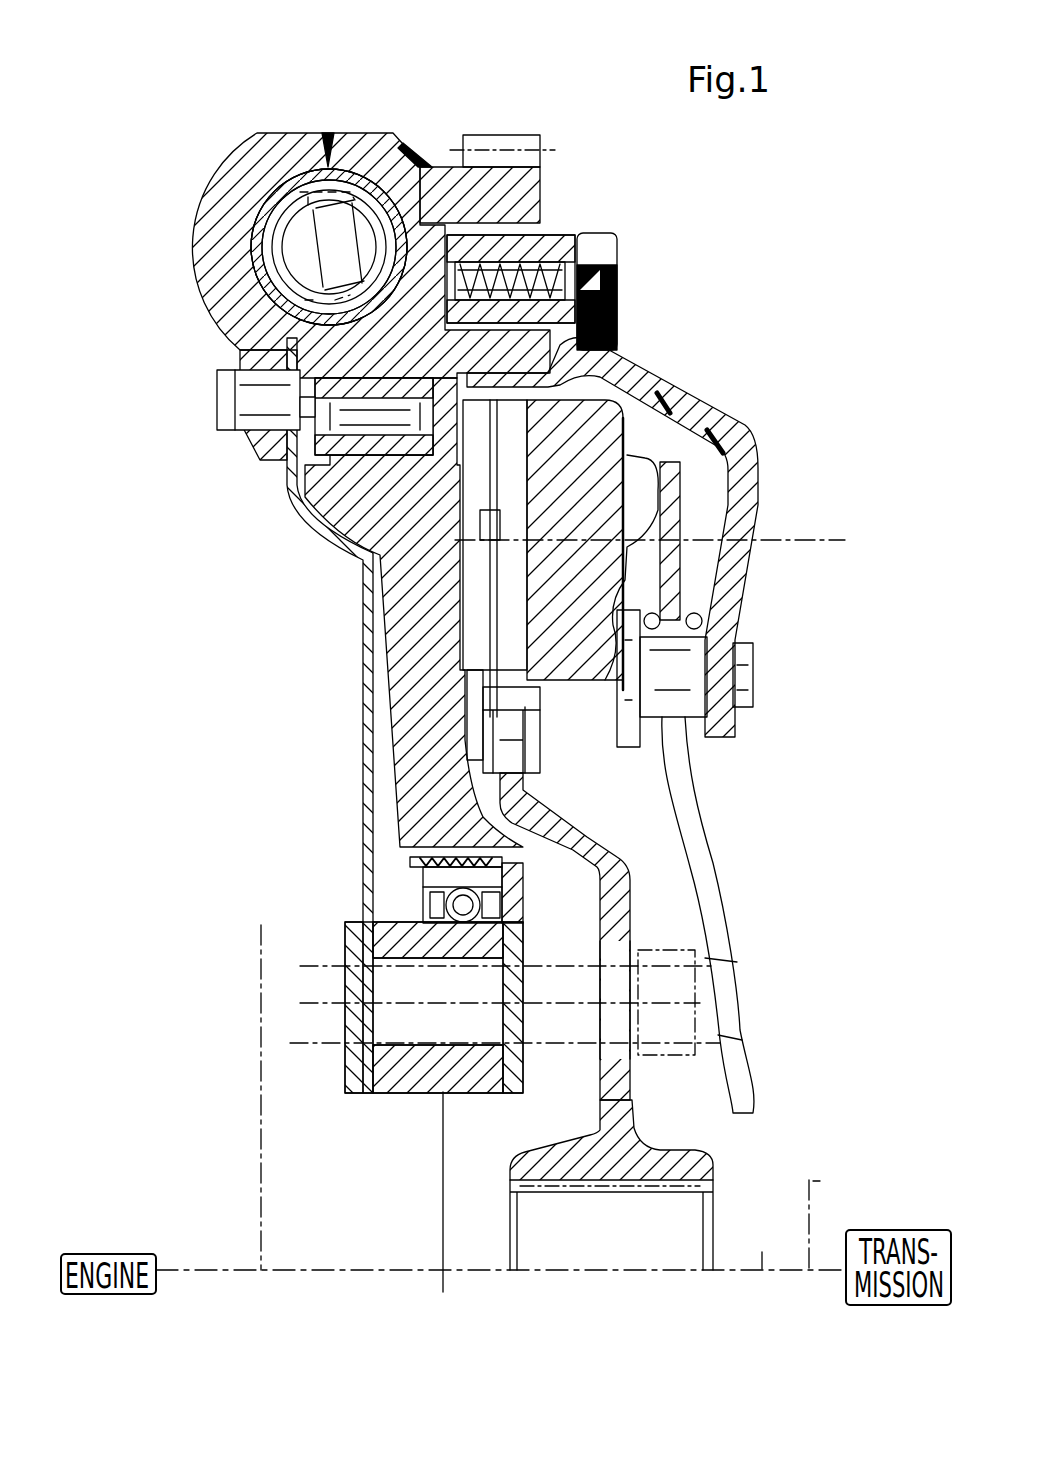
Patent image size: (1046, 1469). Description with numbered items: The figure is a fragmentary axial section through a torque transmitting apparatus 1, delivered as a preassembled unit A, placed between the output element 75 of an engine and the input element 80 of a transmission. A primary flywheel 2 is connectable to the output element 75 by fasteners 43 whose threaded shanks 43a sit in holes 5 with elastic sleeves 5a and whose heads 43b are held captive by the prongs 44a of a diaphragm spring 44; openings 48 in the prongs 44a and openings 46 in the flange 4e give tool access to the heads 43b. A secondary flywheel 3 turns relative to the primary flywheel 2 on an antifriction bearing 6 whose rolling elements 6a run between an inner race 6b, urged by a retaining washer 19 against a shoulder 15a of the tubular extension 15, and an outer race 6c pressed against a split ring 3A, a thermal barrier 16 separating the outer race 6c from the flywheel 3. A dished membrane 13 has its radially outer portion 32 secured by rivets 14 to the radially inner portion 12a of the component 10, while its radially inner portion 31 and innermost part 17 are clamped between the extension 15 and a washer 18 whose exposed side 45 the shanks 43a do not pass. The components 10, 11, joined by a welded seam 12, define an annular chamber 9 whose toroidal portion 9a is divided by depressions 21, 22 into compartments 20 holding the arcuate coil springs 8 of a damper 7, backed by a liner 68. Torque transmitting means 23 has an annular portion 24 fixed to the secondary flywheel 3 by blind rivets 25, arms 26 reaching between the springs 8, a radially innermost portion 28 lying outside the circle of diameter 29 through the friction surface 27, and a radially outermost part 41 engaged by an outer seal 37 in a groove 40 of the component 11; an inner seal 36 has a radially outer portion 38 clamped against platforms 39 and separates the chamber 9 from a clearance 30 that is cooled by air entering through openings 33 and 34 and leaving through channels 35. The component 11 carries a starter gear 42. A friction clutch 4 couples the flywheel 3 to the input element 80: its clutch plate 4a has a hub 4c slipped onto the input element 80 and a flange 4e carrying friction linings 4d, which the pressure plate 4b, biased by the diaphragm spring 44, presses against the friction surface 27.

The torque transmitting apparatus 1 is at (568, 82).
The primary flywheel 2 is at (212, 322).
The secondary flywheel 3 is at (397, 785).
The split ring 3A is at (408, 862).
The friction clutch 4 is at (757, 462).
The clutch plate 4a is at (715, 1162).
The pressure plate 4b is at (603, 567).
The hub 4c is at (540, 1160).
The friction lining 4d is at (513, 632).
The flange 4e is at (553, 813).
The holes 5 is at (385, 985).
The elastic sleeves 5a is at (378, 1030).
The antifriction bearing 6 is at (440, 908).
The spherical rolling elements 6a is at (413, 900).
The inner race 6b is at (470, 930).
The outer race 6c is at (480, 888).
The damper 7 is at (247, 218).
The energy storing elements 8 is at (293, 273).
The annular chamber 9 is at (300, 478).
The toroidal radially outermost portion 9a is at (402, 133).
The component 10 is at (233, 177).
The component 11 is at (373, 143).
The seam 12 is at (328, 133).
The radially inner portion 12a is at (257, 443).
The membrane 13 is at (363, 760).
The rivets 14 is at (253, 387).
The tubular extension 15 is at (448, 1215).
The shoulder 15a is at (375, 960).
The thermal insulator 16 is at (500, 866).
The radially innermost part 17 is at (345, 1090).
The washer-like member 18 is at (360, 1052).
The retaining washer 19 is at (525, 930).
The arcuate compartments 20 is at (253, 145).
The depression 21 is at (265, 300).
The depression 22 is at (430, 147).
The torque transmitting means 23 is at (318, 352).
The circumferentially complete annular portion 24 is at (292, 492).
The blind rivets 25 is at (470, 400).
The arms 26 is at (265, 250).
The annular friction surface 27 is at (378, 580).
The radially innermost portion 28 is at (330, 476).
The diameter 29 is at (823, 545).
The clearance 30 is at (383, 813).
The radially inner portion 31 is at (367, 840).
The radially outer portion 32 is at (290, 437).
The openings 33 is at (380, 733).
The openings 34 is at (400, 640).
The channels 35 is at (440, 450).
The seal 36 is at (360, 520).
The outer seal 37 is at (600, 235).
The radially outer portion 38 is at (667, 410).
The platforms 39 is at (613, 333).
The groove 40 is at (617, 270).
The radially outermost part 41 is at (215, 305).
The starter gear 42 is at (530, 137).
The fasteners 43 is at (672, 973).
The shanks 43a is at (363, 1035).
The heads 43b is at (672, 1033).
The diaphragm spring 44 is at (670, 520).
The prongs 44a is at (690, 825).
The exposed outer side 45 is at (350, 922).
The openings 46 is at (617, 1053).
The openings 48 is at (677, 1002).
The liner 68 is at (297, 180).
The rotary output element 75 is at (262, 925).
The rotary input element 80 is at (761, 1288).
The unit A is at (737, 1192).